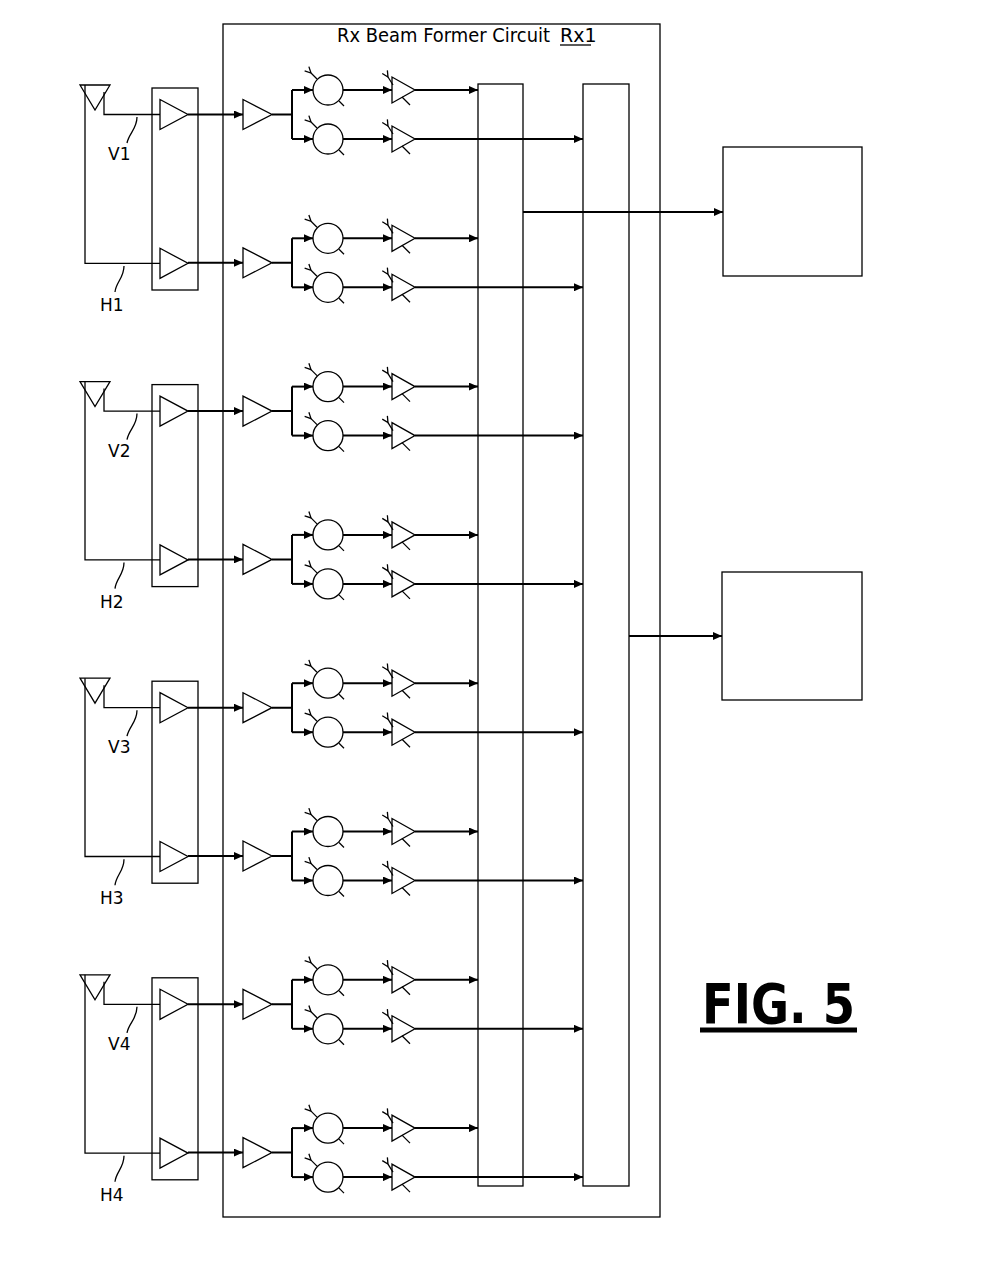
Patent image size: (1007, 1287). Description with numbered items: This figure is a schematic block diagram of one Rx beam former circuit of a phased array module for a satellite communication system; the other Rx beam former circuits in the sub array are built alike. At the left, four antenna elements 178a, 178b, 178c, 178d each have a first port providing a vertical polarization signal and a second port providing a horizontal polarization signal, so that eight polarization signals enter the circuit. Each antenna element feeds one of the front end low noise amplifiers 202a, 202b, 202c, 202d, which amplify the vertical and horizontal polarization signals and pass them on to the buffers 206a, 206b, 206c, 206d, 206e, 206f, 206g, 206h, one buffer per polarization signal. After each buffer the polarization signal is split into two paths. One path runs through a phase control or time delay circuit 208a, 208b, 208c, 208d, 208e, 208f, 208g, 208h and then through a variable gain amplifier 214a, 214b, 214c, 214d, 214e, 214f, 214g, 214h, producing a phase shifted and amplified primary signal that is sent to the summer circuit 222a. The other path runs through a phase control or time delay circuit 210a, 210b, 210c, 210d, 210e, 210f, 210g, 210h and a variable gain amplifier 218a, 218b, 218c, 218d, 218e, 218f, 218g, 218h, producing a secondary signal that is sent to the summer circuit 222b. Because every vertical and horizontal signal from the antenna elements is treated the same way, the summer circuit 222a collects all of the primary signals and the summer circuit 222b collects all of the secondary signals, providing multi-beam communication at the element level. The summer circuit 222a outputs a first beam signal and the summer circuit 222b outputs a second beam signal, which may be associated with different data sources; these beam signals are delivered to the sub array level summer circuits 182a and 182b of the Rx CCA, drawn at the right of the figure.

The antenna element 178a is at (94, 85).
The antenna element 178b is at (101, 455).
The antenna element 178c is at (101, 751).
The antenna element 178d is at (101, 1048).
The front end low noise amplifier 202a is at (180, 88).
The front end low noise amplifier 202b is at (163, 469).
The front end low noise amplifier 202c is at (163, 765).
The front end low noise amplifier 202d is at (163, 1062).
The buffer 206a is at (266, 108).
The buffer 206b is at (233, 246).
The buffer 206c is at (232, 395).
The buffer 206d is at (233, 543).
The buffer 206e is at (233, 691).
The buffer 206f is at (231, 840).
The buffer 206g is at (233, 988).
The buffer 206h is at (233, 1136).
The phase control circuit 208a is at (340, 75).
The phase control circuit 208b is at (316, 224).
The phase control circuit 208c is at (316, 373).
The phase control circuit 208d is at (316, 521).
The phase control circuit 208e is at (316, 669).
The phase control circuit 208f is at (316, 818).
The phase control circuit 208g is at (316, 966).
The phase control circuit 208h is at (316, 1114).
The phase control circuit 210a is at (330, 154).
The phase control circuit 210b is at (309, 297).
The phase control circuit 210c is at (309, 446).
The phase control circuit 210d is at (309, 594).
The phase control circuit 210e is at (309, 742).
The phase control circuit 210f is at (309, 891).
The phase control circuit 210g is at (309, 1039).
The phase control circuit 210h is at (309, 1187).
The variable gain amplifier 214a is at (405, 79).
The variable gain amplifier 214b is at (379, 228).
The variable gain amplifier 214c is at (379, 377).
The variable gain amplifier 214d is at (379, 525).
The variable gain amplifier 214e is at (379, 673).
The variable gain amplifier 214f is at (379, 822).
The variable gain amplifier 214g is at (379, 970).
The variable gain amplifier 214h is at (379, 1118).
The variable gain amplifier 218a is at (405, 147).
The variable gain amplifier 218b is at (379, 295).
The variable gain amplifier 218c is at (379, 444).
The variable gain amplifier 218d is at (379, 592).
The variable gain amplifier 218e is at (379, 740).
The variable gain amplifier 218f is at (379, 889).
The variable gain amplifier 218g is at (379, 1037).
The variable gain amplifier 218h is at (379, 1185).
The summer circuit 222a is at (506, 84).
The summer circuit 222b is at (617, 84).
The summer circuit 182a is at (744, 147).
The summer circuit 182b is at (769, 572).